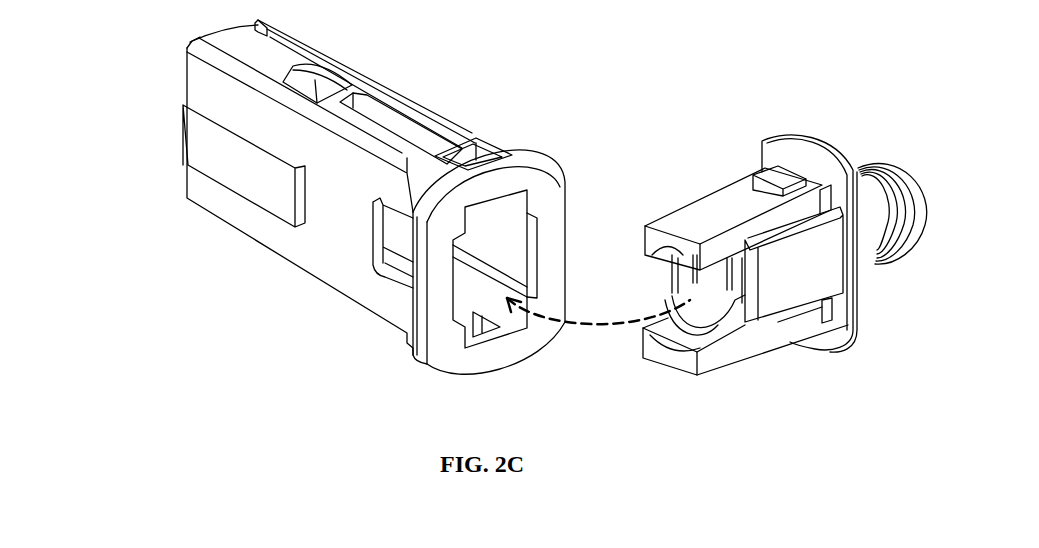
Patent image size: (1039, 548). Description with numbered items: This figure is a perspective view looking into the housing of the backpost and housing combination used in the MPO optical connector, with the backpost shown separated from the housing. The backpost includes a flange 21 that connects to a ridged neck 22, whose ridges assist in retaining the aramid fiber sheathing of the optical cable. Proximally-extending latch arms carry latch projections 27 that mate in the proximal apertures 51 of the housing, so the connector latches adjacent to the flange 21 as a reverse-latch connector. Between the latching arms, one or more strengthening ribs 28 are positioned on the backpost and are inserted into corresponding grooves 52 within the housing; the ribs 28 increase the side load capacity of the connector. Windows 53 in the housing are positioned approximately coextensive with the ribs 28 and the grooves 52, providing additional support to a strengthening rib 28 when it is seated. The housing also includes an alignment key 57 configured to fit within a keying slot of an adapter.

The flange 21 is at (817, 170).
The ridged neck 22 is at (913, 193).
The latch projections 27 is at (774, 180).
The strengthening ribs 28 is at (810, 284).
The proximal apertures 51 is at (472, 152).
The grooves 52 is at (532, 252).
The windows 53 is at (408, 235).
The alignment key 57 is at (252, 177).